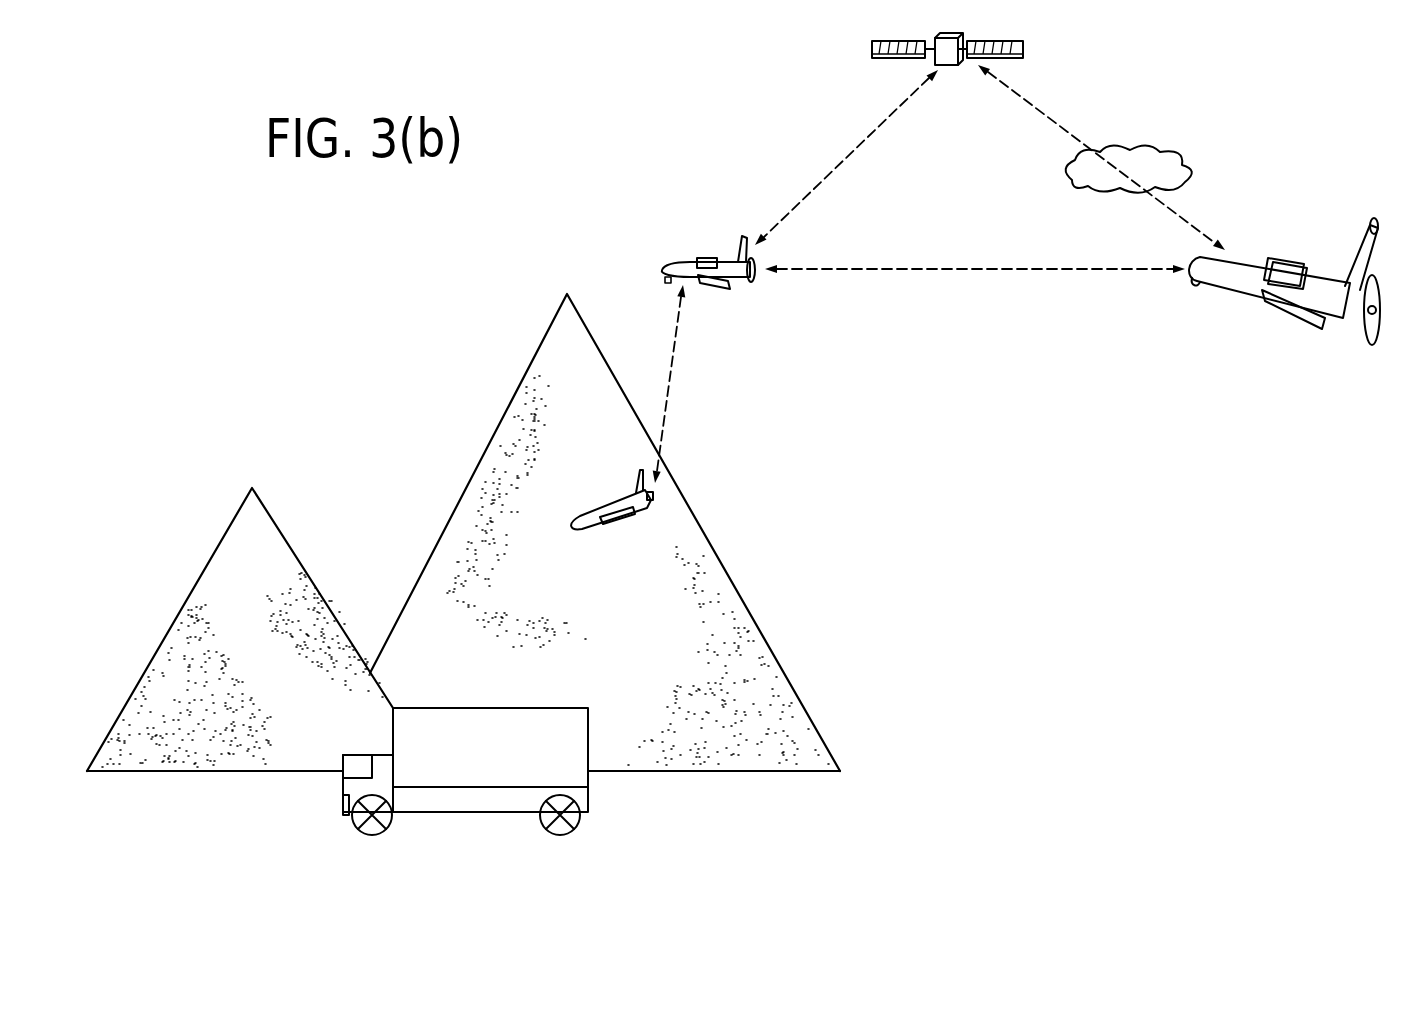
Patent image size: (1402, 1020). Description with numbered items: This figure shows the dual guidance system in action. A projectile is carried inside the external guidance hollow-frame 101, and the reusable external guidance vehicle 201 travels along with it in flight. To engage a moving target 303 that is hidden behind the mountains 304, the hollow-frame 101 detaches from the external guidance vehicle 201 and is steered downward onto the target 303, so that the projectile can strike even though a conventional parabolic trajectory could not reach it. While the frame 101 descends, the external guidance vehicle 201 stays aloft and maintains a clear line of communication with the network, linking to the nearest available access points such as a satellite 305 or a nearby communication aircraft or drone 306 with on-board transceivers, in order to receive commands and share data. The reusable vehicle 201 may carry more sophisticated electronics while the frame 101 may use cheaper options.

The external guidance hollow-frame 101 is at (612, 505).
The external guidance vehicle 201 is at (740, 290).
The moving target 303 is at (453, 728).
The mountains 304 is at (284, 537).
The satellite 305 is at (952, 67).
The manned aircraft 306 is at (1232, 282).